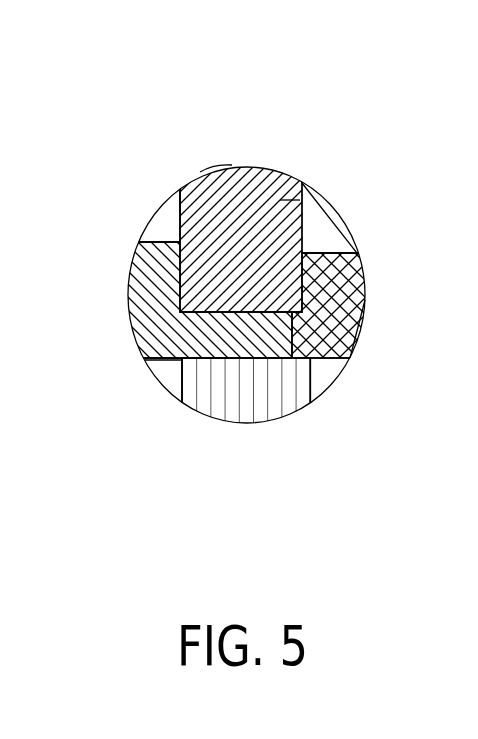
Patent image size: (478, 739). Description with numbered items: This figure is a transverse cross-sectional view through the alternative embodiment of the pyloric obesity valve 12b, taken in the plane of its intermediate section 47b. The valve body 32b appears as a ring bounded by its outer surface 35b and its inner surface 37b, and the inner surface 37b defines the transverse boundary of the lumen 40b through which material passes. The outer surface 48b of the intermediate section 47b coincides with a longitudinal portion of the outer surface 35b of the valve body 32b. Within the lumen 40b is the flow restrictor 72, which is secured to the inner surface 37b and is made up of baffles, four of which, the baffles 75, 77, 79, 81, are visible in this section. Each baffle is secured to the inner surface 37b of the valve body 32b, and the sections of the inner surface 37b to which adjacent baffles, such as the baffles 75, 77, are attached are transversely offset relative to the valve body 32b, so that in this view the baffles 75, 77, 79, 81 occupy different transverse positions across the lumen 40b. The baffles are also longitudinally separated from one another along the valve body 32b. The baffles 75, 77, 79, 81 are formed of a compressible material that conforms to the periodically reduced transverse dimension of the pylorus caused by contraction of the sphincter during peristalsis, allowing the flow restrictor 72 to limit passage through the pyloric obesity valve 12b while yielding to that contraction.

The pyloric obesity valve 12b is at (142, 230).
The valve body 32b is at (360, 342).
The outer surface 35b is at (145, 358).
The inner surface 37b is at (174, 392).
The lumen 40b is at (320, 217).
The intermediate section 47b is at (192, 178).
The outer surface of intermediate section 48b is at (213, 167).
The flow restrictor 72 is at (275, 200).
The baffle 75 is at (240, 188).
The baffle 77 is at (147, 293).
The baffle 79 is at (342, 293).
The baffle 81 is at (245, 405).